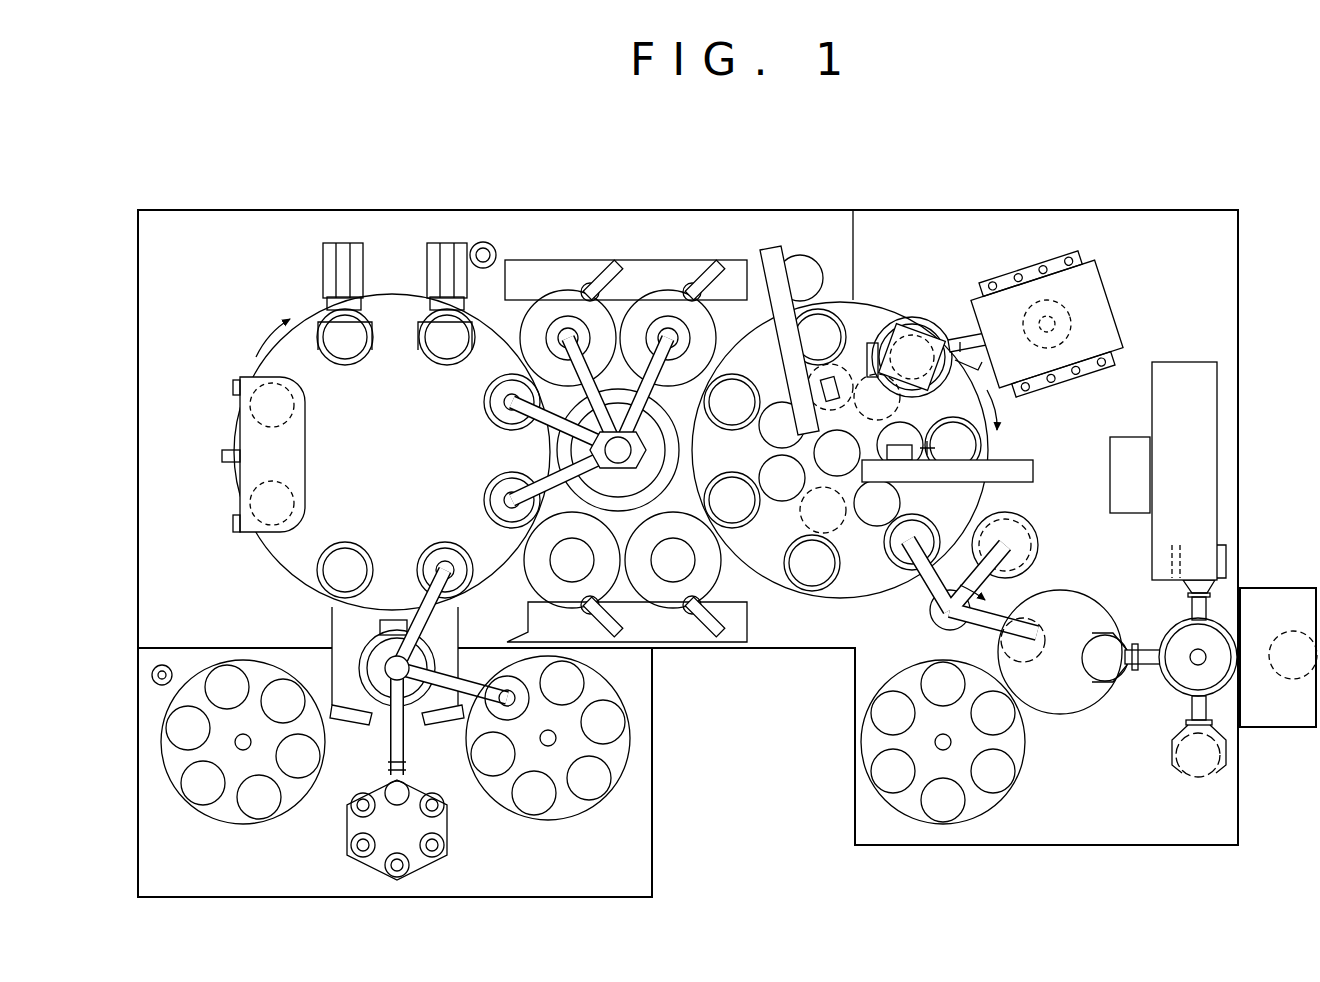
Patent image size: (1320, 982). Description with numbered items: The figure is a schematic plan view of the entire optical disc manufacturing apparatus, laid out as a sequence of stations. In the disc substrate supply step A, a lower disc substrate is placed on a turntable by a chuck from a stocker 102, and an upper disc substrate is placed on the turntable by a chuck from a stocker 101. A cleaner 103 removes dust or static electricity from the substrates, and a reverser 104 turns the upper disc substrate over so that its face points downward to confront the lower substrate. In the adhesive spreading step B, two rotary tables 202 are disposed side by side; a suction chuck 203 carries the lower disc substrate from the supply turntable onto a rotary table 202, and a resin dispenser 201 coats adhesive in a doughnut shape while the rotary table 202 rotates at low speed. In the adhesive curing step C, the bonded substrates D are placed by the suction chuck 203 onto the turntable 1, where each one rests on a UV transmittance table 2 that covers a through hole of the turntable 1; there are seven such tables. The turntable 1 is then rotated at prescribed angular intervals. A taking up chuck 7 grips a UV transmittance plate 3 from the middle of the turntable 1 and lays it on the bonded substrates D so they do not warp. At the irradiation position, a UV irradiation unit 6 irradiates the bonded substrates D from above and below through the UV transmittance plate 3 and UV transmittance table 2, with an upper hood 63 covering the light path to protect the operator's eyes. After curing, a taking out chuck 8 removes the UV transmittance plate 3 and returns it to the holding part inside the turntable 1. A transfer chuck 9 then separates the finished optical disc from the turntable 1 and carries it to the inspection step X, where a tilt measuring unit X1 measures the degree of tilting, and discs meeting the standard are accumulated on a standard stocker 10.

The turntable 1 is at (870, 577).
The UV transmittance table 2 is at (745, 390).
The UV transmittance plate 3 is at (765, 432).
The UV irradiation unit 6 is at (1095, 292).
The taking up chuck 7 is at (778, 250).
The taking out chuck 8 is at (1010, 463).
The transfer chuck 9 is at (930, 592).
The standard stocker 10 is at (985, 808).
The upper hood 63 is at (912, 320).
The stocker 101 is at (292, 802).
The stocker 102 is at (562, 812).
The cleaner 103 is at (303, 440).
The reverser 104 is at (375, 338).
The resin dispenser 201 is at (716, 262).
The rotary table 202 is at (646, 305).
The suction chuck 203 is at (668, 336).
The disc substrate supply step A is at (292, 260).
The adhesive spreading step B is at (636, 232).
The adhesive curing step C is at (958, 270).
The bonded substrates D is at (355, 548).
The inspection step X is at (1146, 755).
The tilt measuring unit X1 is at (1183, 375).